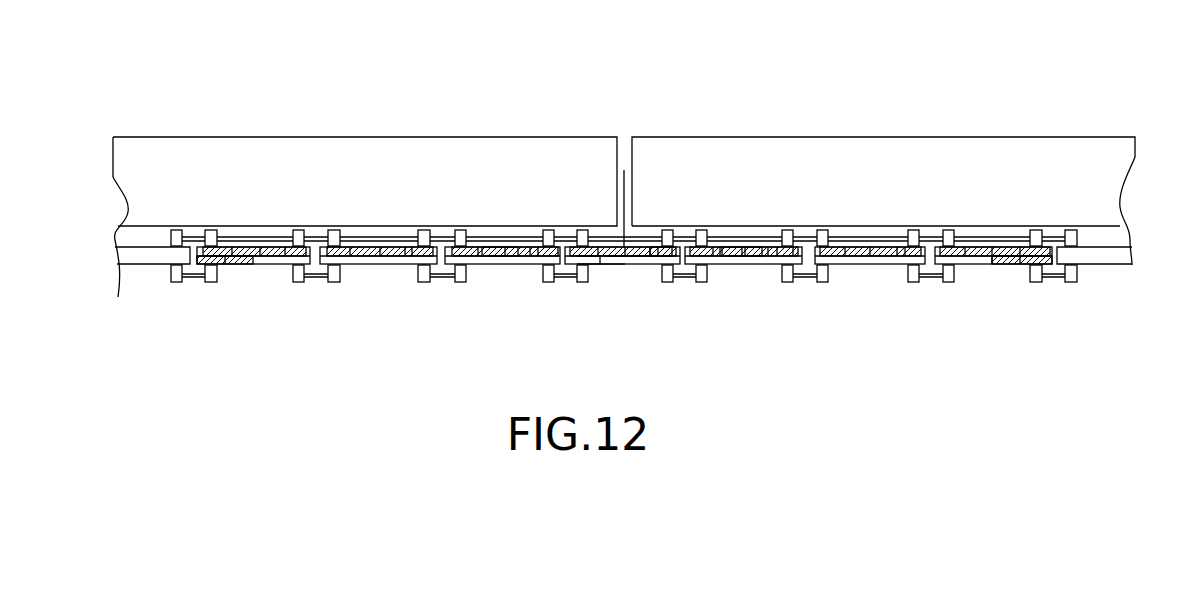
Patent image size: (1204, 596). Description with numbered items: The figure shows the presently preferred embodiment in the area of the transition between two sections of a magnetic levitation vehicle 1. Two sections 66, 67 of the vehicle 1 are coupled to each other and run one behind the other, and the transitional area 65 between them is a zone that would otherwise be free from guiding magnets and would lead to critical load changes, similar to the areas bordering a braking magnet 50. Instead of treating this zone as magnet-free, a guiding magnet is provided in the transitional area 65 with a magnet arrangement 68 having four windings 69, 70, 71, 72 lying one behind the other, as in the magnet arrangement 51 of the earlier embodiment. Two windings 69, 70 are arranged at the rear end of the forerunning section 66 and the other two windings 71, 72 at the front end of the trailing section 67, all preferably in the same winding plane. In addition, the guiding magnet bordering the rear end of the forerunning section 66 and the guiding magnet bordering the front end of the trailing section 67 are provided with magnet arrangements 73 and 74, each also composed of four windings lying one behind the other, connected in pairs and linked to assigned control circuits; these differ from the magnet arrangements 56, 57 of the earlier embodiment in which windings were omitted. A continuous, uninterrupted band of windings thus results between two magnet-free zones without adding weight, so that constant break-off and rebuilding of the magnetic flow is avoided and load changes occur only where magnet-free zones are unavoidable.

The magnetic levitation vehicle 1 is at (151, 110).
The braking magnet 50 is at (132, 257).
The magnet arrangement 51 is at (375, 300).
The magnet arrangement 56 is at (222, 308).
The magnet arrangement 57 is at (977, 303).
The transitional area 65 is at (617, 108).
The section 66 is at (260, 158).
The section 67 is at (790, 157).
The magnet arrangement 68 is at (610, 303).
The winding 69 is at (590, 262).
The winding 70 is at (617, 257).
The winding 71 is at (640, 253).
The winding 72 is at (660, 246).
The magnet arrangement 73 is at (510, 254).
The magnet arrangement 74 is at (730, 255).